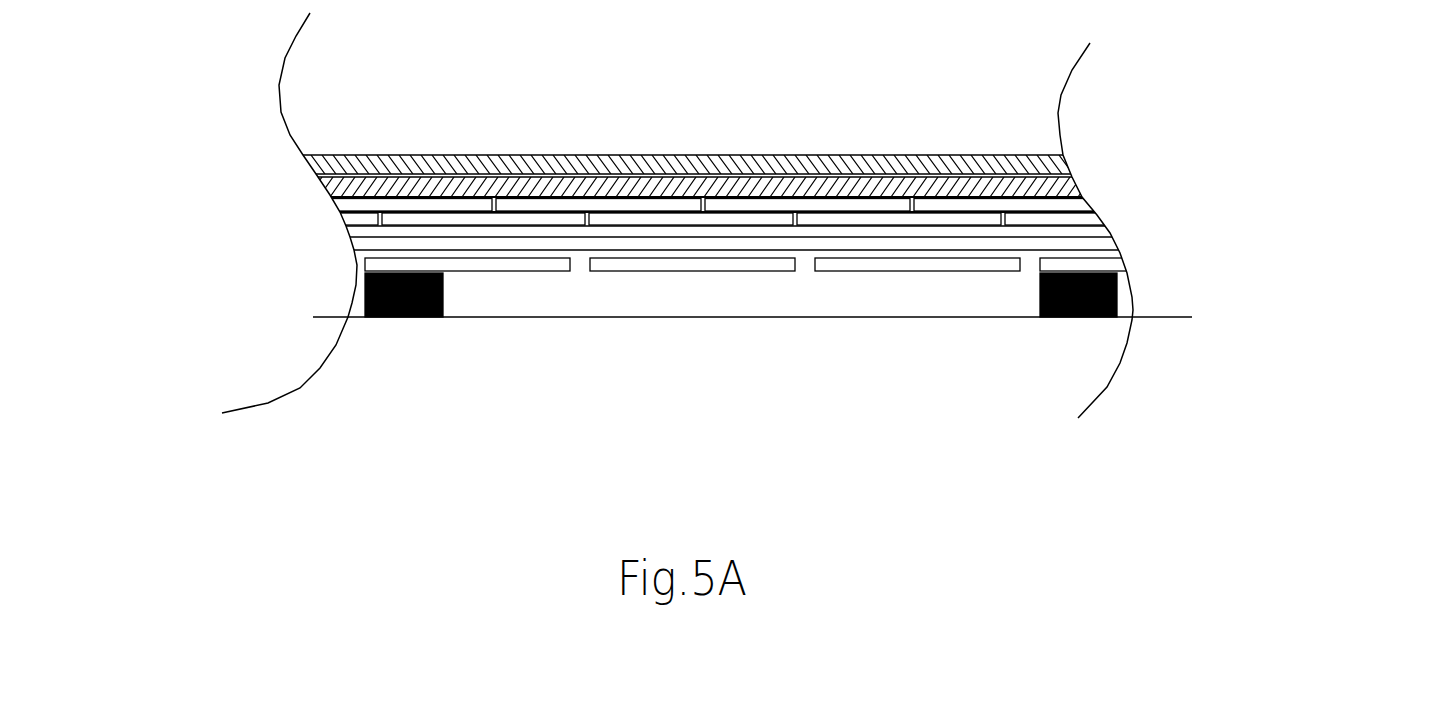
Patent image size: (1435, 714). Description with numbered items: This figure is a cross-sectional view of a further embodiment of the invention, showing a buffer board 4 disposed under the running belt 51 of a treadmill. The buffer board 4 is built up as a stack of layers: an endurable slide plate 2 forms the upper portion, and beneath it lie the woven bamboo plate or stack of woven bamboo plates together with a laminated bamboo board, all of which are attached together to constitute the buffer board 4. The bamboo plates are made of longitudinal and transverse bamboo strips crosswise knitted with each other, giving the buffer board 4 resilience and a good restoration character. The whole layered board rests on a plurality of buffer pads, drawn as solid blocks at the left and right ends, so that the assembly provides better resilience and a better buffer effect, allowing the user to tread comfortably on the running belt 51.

The running belt 51 is at (712, 155).
The endurable slide plate 2 is at (910, 190).
The buffer board 4 is at (820, 215).